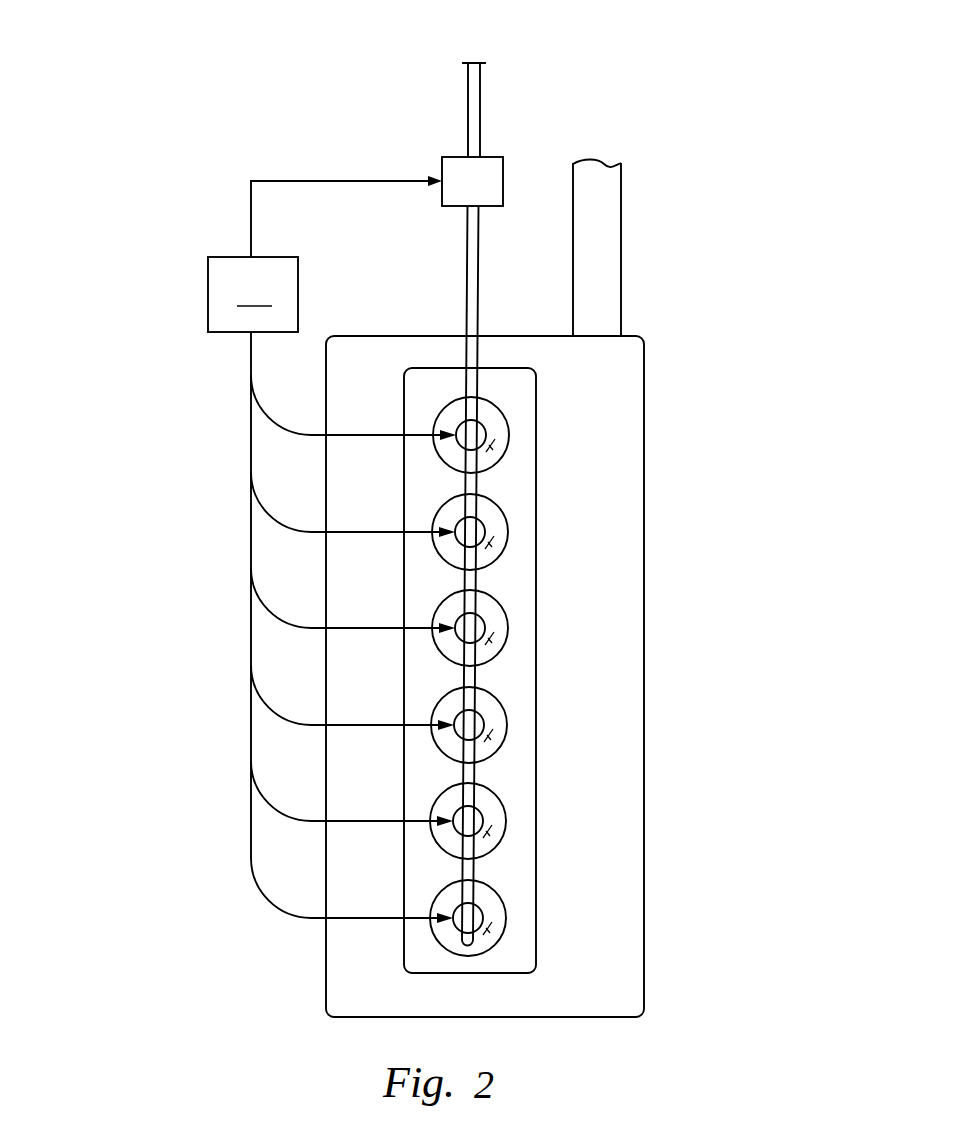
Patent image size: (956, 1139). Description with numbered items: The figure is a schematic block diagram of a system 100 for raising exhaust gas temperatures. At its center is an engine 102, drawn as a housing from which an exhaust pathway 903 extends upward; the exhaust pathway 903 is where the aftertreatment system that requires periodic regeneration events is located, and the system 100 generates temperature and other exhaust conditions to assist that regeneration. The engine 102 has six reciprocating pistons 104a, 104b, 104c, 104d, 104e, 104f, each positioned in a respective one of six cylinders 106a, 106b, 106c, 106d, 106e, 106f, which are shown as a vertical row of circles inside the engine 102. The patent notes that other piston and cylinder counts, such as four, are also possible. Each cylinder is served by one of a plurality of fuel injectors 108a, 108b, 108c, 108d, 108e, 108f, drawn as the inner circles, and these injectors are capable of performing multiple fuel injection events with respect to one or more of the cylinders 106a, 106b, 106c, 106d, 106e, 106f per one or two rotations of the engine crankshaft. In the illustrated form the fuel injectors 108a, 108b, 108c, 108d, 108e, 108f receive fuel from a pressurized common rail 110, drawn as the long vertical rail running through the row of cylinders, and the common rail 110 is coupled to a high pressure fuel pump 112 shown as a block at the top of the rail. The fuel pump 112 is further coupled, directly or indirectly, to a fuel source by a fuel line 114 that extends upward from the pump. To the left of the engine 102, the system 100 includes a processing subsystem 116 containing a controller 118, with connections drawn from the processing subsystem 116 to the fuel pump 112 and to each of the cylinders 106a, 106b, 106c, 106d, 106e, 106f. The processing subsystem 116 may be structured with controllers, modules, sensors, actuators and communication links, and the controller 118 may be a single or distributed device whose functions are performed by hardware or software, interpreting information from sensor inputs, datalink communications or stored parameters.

The system 100 is at (136, 90).
The engine 102 is at (152, 572).
The reciprocating piston 104a is at (492, 447).
The reciprocating piston 104b is at (491, 544).
The reciprocating piston 104c is at (491, 640).
The reciprocating piston 104d is at (490, 737).
The reciprocating piston 104e is at (489, 833).
The reciprocating piston 104f is at (489, 930).
The cylinder 106a is at (483, 399).
The cylinder 106b is at (482, 496).
The cylinder 106c is at (482, 592).
The cylinder 106d is at (481, 689).
The cylinder 106e is at (480, 785).
The cylinder 106f is at (480, 882).
The fuel injector 108a is at (485, 423).
The fuel injector 108b is at (484, 520).
The fuel injector 108c is at (484, 616).
The fuel injector 108d is at (483, 713).
The fuel injector 108e is at (482, 809).
The fuel injector 108f is at (482, 906).
The pressurized common rail 110 is at (468, 232).
The high pressure fuel pump 112 is at (492, 157).
The fuel line 114 is at (468, 96).
The processing subsystem 116 is at (208, 272).
The controller 118 is at (254, 295).
The exhaust pathway 903 is at (621, 213).